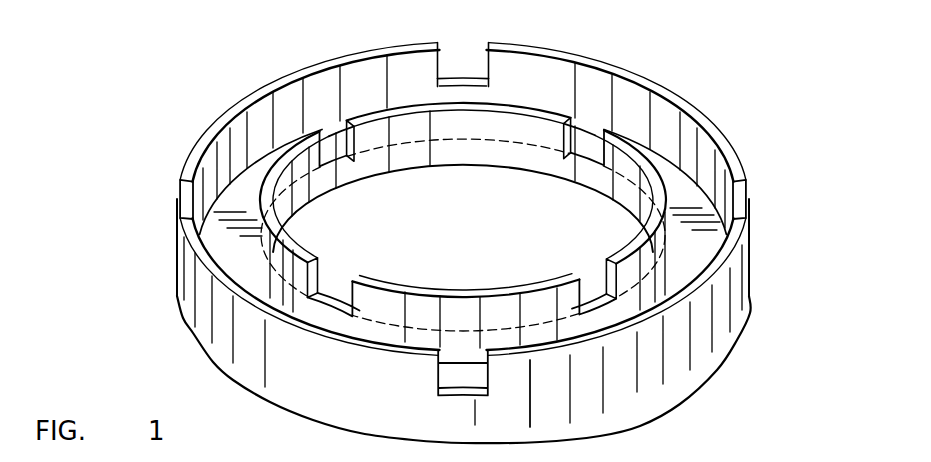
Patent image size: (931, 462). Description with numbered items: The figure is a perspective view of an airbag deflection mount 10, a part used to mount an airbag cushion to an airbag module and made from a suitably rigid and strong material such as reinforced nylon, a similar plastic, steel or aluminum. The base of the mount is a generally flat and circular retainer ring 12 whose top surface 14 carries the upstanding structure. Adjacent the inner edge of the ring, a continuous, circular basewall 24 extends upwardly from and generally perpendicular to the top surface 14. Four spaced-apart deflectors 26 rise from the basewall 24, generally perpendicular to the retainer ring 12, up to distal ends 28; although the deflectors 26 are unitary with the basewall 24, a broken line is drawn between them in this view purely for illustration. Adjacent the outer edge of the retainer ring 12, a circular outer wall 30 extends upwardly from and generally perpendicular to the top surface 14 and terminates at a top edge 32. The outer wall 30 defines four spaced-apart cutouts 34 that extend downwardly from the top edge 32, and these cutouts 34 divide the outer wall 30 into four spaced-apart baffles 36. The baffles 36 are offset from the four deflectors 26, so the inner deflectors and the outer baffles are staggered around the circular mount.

The airbag deflection mount 10 is at (770, 100).
The retainer ring 12 is at (692, 250).
The top surface 14 is at (735, 206).
The basewall 24 is at (405, 337).
The deflectors 26 is at (538, 118).
The distal ends 28 is at (494, 107).
The outer wall 30 is at (688, 348).
The top edge 32 is at (238, 106).
The cutouts 34 is at (446, 70).
The baffles 36 is at (295, 88).